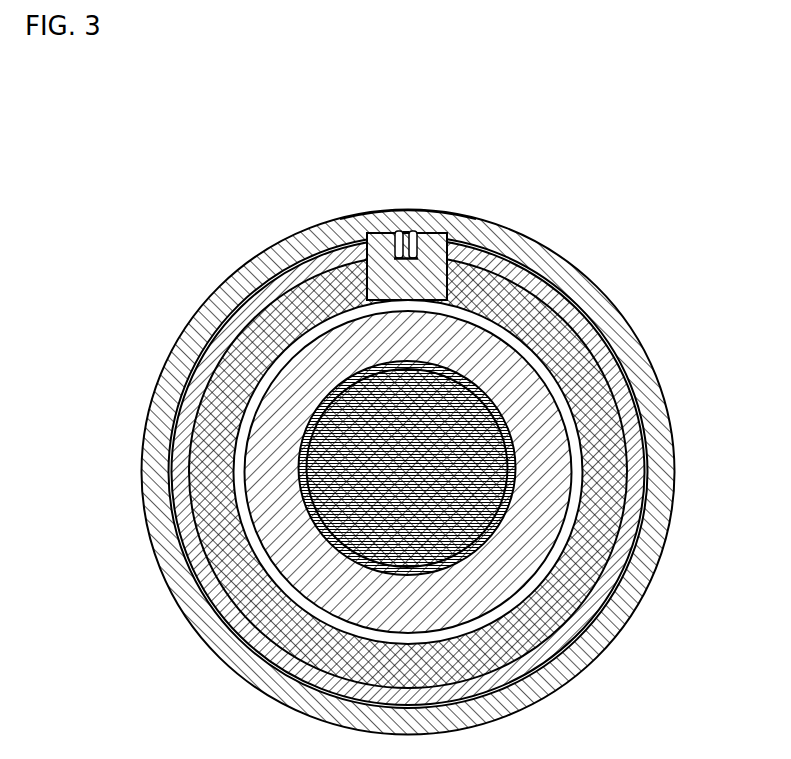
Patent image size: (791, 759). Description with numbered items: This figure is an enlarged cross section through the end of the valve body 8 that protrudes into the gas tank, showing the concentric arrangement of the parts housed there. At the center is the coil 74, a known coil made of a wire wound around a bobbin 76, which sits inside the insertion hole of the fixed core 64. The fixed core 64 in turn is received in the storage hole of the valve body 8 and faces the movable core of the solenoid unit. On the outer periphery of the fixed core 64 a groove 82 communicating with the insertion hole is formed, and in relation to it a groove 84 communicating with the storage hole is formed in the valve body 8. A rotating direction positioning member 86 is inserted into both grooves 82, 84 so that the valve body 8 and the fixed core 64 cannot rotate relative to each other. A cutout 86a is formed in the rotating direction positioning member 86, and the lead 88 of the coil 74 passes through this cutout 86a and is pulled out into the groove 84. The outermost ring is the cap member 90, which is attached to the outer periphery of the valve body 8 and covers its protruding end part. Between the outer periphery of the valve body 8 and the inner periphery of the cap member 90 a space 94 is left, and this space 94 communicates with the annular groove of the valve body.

The valve body 8 is at (633, 398).
The fixed core 64 is at (573, 643).
The coil 74 is at (547, 489).
The bobbin 76 is at (470, 527).
The groove 82 is at (458, 220).
The groove 84 is at (368, 210).
The rotating direction positioning member 86 is at (447, 283).
The cutout 86a is at (406, 232).
The lead 88 is at (399, 232).
The cap member 90 is at (575, 277).
The space 94 is at (600, 320).